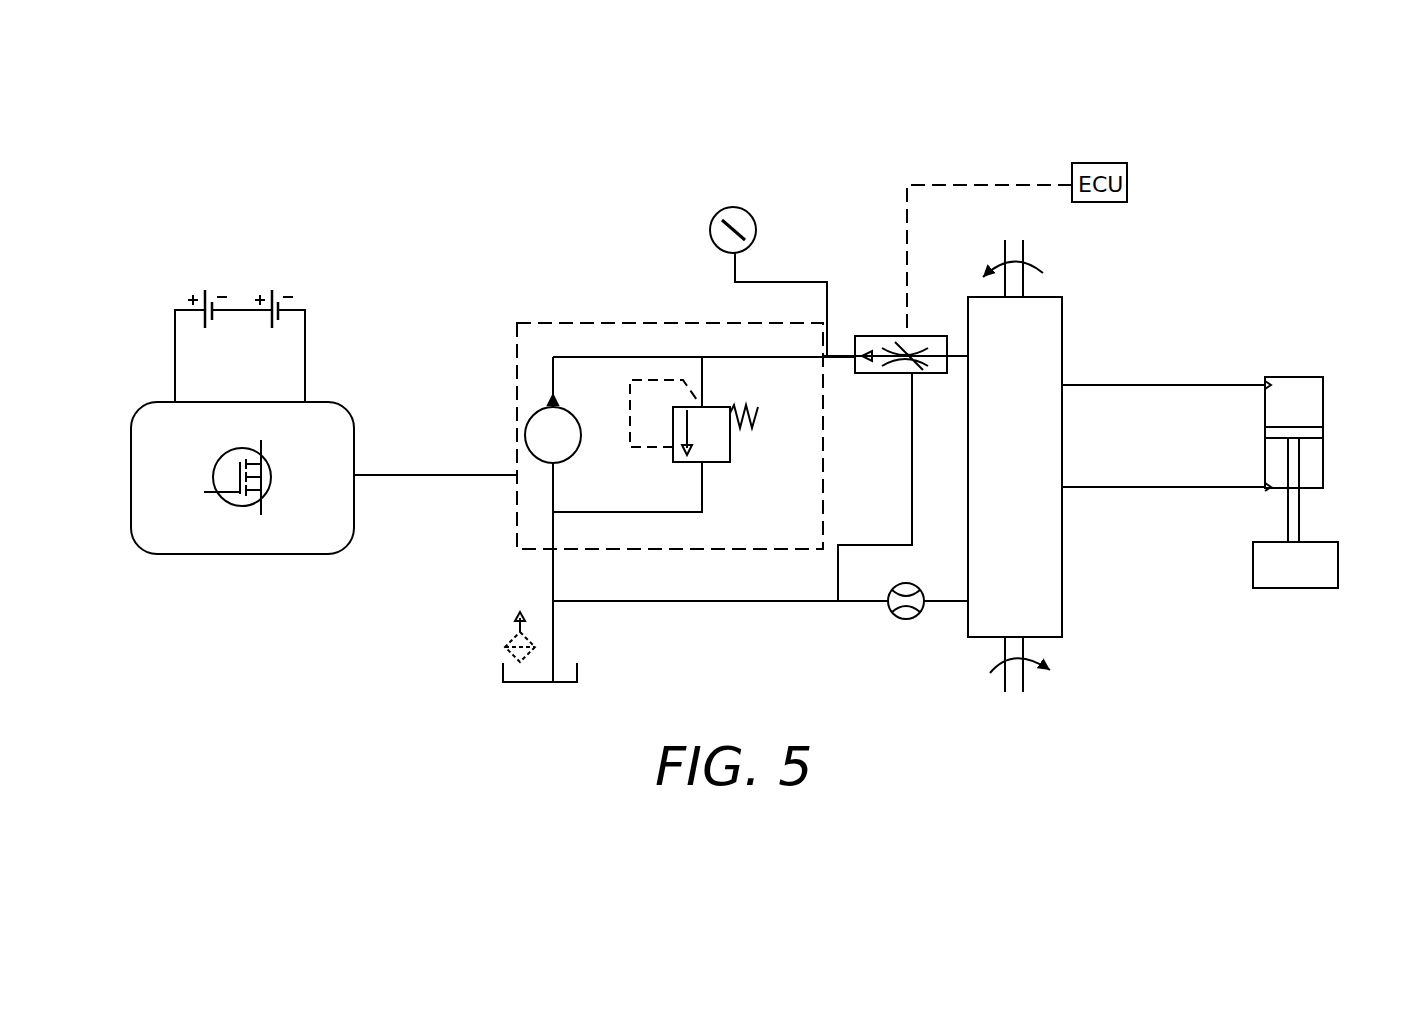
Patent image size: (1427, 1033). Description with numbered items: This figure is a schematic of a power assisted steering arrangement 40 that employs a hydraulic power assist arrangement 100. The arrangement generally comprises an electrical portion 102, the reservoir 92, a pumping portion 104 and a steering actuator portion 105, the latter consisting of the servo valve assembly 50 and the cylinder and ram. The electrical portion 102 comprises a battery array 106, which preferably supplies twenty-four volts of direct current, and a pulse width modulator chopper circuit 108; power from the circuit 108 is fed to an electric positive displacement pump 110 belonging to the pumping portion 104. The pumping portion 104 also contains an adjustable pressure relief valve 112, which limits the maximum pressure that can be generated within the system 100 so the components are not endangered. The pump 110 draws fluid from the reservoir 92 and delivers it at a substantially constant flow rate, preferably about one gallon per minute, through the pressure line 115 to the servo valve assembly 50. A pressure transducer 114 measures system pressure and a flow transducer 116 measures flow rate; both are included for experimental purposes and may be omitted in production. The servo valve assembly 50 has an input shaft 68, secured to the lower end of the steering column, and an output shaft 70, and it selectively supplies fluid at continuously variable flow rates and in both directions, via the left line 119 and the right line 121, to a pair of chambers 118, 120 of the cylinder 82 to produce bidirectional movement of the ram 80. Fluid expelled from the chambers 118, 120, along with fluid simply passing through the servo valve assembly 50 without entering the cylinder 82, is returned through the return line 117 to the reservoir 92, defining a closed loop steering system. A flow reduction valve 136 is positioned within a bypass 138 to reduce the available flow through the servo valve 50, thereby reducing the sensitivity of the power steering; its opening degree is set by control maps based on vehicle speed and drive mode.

The power assist arrangement 100 is at (870, 82).
The electrical portion 102 is at (350, 380).
The pumping portion 104 is at (662, 517).
The steering actuator portion 105 is at (1202, 292).
The battery array 106 is at (231, 249).
The pulse width modulator chopper circuit 108 is at (283, 554).
The electric positive displacement pump 110 is at (542, 423).
The adjustable pressure relief valve 112 is at (717, 400).
The pressure transducer 114 is at (748, 203).
The pressure line 115 is at (955, 350).
The flow transducer 116 is at (923, 612).
The return line 117 is at (953, 602).
The reservoir 92 is at (517, 685).
The flow reduction valve 136 is at (900, 380).
The bypass 138 is at (912, 467).
The servo valve assembly 50 is at (1038, 337).
The input shaft 68 is at (1025, 247).
The output shaft 70 is at (1025, 685).
The left line 119 is at (1108, 385).
The right line 121 is at (1098, 488).
The cylinder 82 is at (1323, 388).
The chamber 118 is at (1285, 403).
The chamber 120 is at (1278, 457).
The ram 80 is at (1297, 515).
The steering arrangement 40 is at (1295, 565).